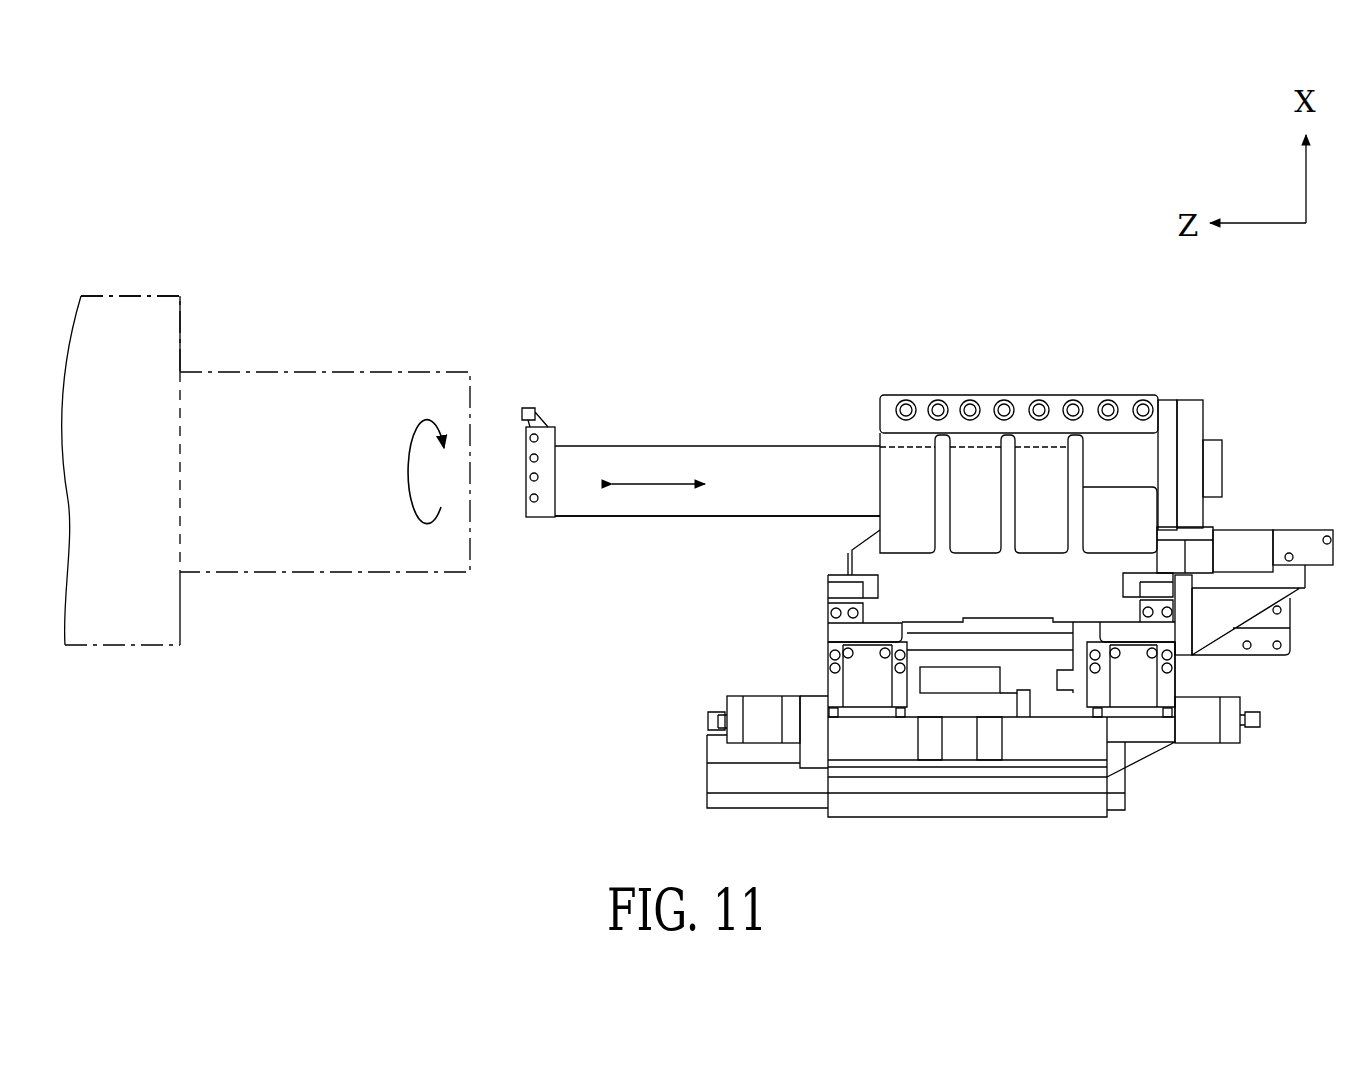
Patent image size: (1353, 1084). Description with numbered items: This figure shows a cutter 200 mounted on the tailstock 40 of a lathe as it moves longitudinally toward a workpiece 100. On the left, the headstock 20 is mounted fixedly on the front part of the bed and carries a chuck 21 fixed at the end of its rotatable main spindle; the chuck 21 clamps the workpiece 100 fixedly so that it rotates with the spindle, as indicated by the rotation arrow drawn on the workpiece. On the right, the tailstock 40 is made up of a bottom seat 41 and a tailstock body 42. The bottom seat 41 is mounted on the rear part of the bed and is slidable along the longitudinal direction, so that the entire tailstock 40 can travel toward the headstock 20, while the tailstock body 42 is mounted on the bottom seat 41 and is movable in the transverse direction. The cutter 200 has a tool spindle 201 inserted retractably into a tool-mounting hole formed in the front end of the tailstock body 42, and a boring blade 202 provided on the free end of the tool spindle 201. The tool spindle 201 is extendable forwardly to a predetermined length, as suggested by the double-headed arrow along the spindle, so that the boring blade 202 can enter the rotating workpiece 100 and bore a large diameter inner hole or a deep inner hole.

The headstock 20 is at (123, 288).
The chuck 21 is at (159, 324).
The workpiece 100 is at (330, 404).
The boring blade 202 is at (523, 406).
The cutter 200 is at (727, 446).
The tool spindle 201 is at (728, 512).
The tailstock 40 is at (1057, 389).
The bottom seat 41 is at (1068, 748).
The tailstock body 42 is at (1163, 420).